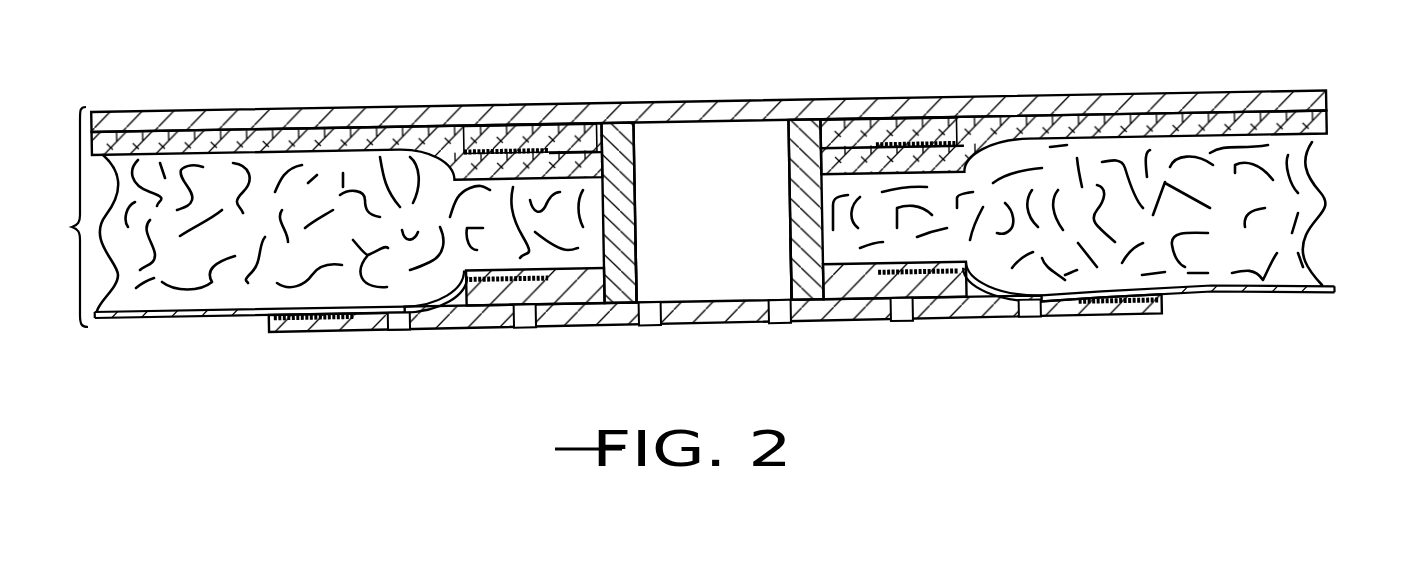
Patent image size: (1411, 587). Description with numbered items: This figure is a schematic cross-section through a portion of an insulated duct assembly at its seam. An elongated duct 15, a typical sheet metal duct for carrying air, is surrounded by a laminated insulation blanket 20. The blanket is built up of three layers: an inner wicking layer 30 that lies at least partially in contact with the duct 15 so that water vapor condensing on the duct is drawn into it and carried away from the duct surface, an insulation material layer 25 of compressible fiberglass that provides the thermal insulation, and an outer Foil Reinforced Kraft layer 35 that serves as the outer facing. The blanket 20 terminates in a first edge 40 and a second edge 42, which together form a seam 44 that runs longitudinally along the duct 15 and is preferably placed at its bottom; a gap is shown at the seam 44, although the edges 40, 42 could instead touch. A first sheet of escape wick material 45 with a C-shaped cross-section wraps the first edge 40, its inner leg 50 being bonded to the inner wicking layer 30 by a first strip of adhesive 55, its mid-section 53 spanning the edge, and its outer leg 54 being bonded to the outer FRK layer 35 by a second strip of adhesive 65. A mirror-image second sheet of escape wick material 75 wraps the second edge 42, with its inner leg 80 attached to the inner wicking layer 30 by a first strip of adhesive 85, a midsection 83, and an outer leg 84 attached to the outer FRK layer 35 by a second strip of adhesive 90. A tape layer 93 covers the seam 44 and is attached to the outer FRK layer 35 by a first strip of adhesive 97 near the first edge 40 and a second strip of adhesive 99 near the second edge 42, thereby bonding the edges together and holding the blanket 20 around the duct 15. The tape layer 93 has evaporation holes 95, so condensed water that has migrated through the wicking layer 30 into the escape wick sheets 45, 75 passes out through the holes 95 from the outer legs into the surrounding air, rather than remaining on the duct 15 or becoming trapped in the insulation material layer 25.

The elongated duct 15 is at (1330, 96).
The inner wicking layer 30 is at (1330, 125).
The insulation material layer 25 is at (1322, 200).
The outer Foil Reinforced Kraft (FRK) layer 35 is at (1333, 291).
The laminated insulation blanket 20 is at (62, 217).
The seam 44 is at (726, 250).
The first edge 40 is at (633, 210).
The second edge 42 is at (792, 217).
The mid-section 53 is at (623, 163).
The midsection 83 is at (782, 163).
The first strip of adhesive 55 is at (483, 142).
The inner leg 50 is at (555, 147).
The inner leg 80 is at (887, 125).
The first strip of adhesive 85 is at (933, 142).
The outer leg 54 is at (558, 315).
The second strip of adhesive 65 is at (505, 293).
The outer leg 84 is at (868, 292).
The second strip of adhesive 90 is at (935, 293).
The tape layer 93 is at (1147, 316).
The evaporation holes 95 is at (400, 329).
The first strip of adhesive 97 is at (268, 320).
The second strip of adhesive 99 is at (1162, 306).
The first sheet of escape wick material 45 is at (639, 277).
The second sheet of escape wick material 75 is at (789, 262).